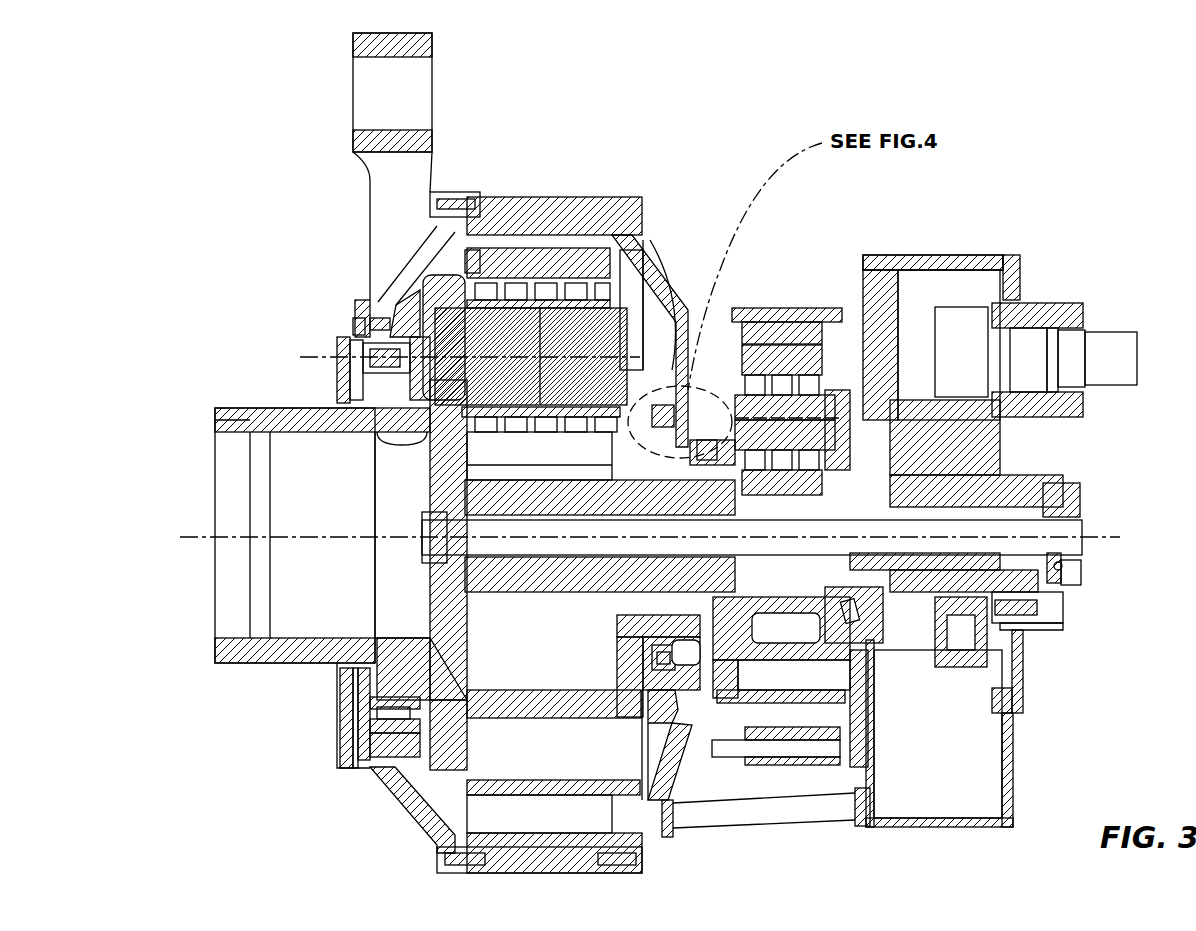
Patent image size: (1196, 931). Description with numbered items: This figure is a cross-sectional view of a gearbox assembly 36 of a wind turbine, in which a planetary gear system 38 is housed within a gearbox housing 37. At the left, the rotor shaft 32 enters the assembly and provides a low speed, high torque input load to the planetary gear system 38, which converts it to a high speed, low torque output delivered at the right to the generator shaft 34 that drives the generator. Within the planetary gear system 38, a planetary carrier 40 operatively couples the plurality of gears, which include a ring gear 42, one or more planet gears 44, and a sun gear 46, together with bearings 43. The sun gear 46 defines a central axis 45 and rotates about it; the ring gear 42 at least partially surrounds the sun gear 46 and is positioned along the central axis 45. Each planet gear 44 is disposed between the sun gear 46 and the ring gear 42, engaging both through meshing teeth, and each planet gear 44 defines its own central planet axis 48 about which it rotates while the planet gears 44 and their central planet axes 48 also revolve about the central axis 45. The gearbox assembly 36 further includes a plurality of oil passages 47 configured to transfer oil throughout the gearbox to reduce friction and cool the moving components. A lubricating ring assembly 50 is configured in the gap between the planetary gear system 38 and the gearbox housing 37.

The rotor shaft 32 is at (215, 470).
The generator shaft 34 is at (1108, 332).
The gearbox assembly 36 is at (1027, 187).
The gearbox housing 37 is at (930, 255).
The planetary gear system 38 is at (464, 243).
The planetary carrier 40 is at (290, 408).
The ring gear 42 is at (538, 222).
The bearings 43 is at (650, 330).
The planet gears 44 is at (620, 262).
The central axis 45 is at (200, 540).
The sun gear 46 is at (518, 575).
The oil passages 47 is at (578, 238).
The central planet axis 48 is at (327, 357).
The ring assembly 50 is at (700, 440).